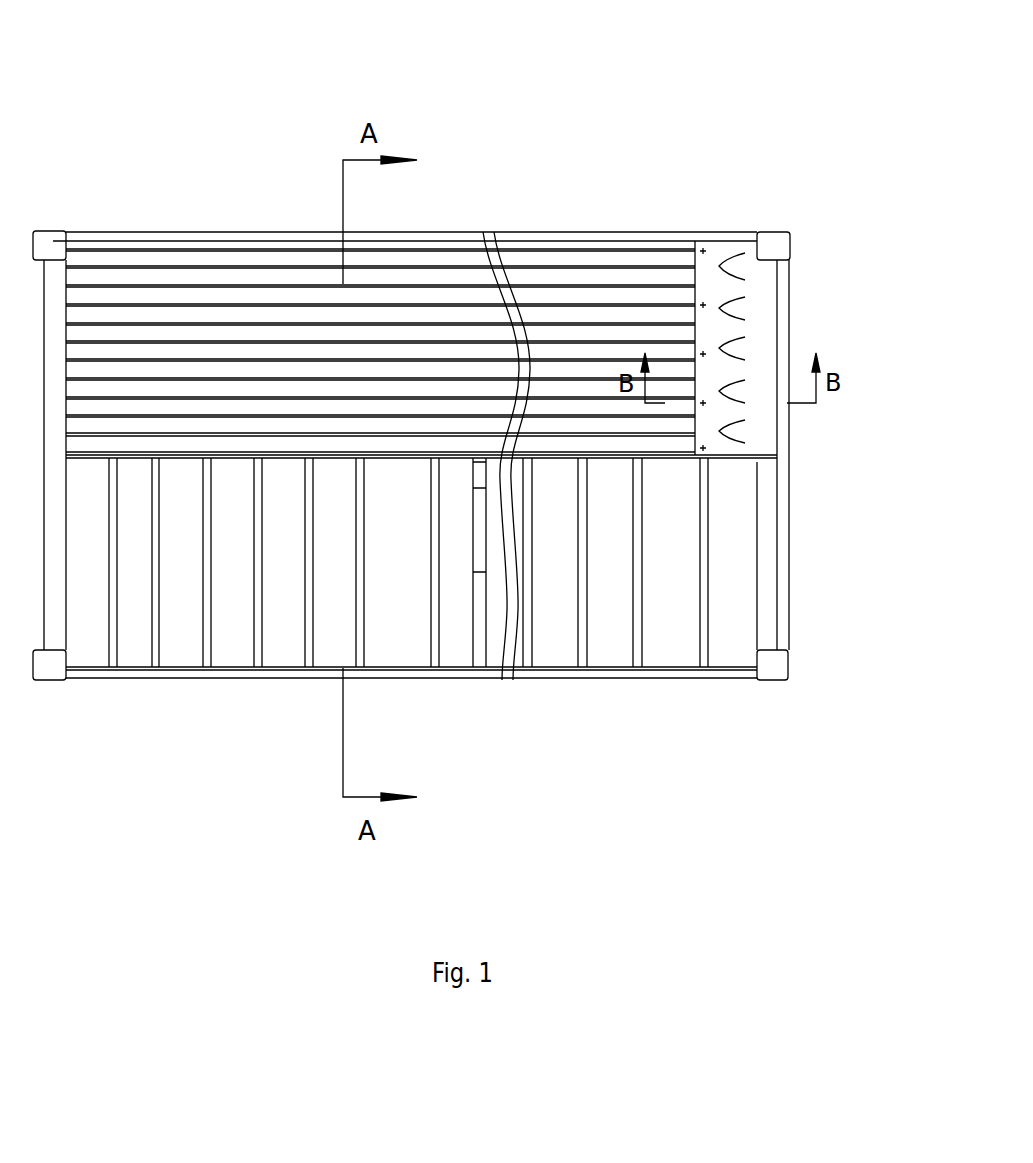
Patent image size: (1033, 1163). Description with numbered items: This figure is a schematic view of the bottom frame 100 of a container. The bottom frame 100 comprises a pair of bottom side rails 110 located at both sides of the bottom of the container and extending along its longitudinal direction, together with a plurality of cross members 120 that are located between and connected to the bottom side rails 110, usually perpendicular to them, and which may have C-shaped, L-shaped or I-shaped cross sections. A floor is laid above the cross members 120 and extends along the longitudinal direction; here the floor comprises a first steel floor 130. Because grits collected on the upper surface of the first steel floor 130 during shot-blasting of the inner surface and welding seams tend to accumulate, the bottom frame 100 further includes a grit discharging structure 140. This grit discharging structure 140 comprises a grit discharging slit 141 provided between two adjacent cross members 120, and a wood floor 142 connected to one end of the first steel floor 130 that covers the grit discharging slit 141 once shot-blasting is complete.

The bottom frame 100 is at (120, 32).
The bottom side rails 110 is at (163, 237).
The cross members 120 is at (585, 640).
The first steel floor 130 is at (622, 272).
The grit discharging structure 140 is at (821, 449).
The grit discharging slit 141 is at (757, 509).
The wood floor 142 is at (755, 439).